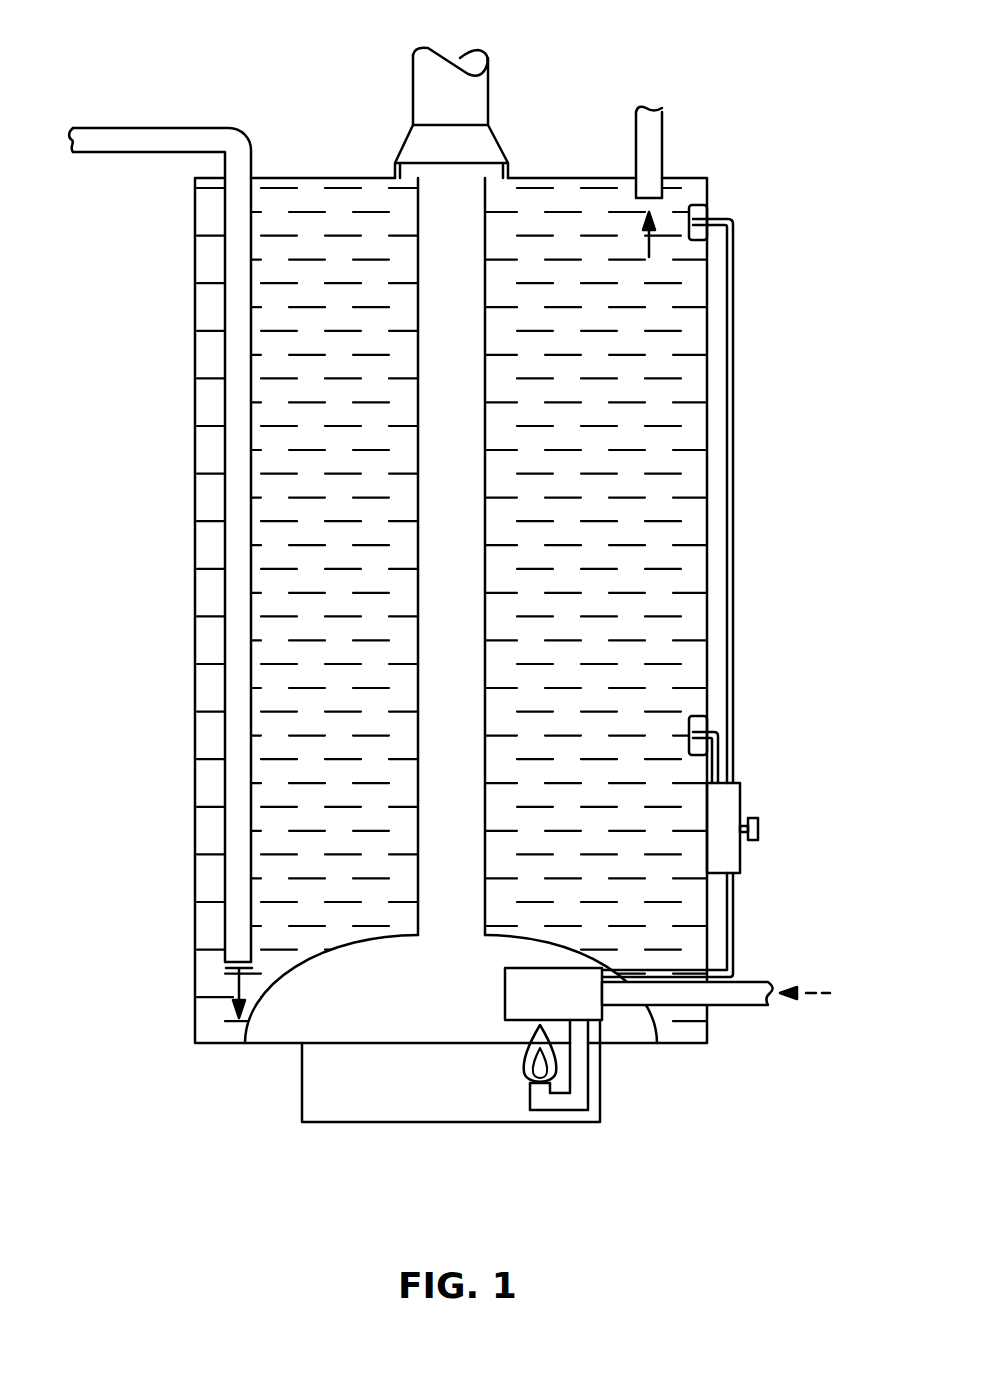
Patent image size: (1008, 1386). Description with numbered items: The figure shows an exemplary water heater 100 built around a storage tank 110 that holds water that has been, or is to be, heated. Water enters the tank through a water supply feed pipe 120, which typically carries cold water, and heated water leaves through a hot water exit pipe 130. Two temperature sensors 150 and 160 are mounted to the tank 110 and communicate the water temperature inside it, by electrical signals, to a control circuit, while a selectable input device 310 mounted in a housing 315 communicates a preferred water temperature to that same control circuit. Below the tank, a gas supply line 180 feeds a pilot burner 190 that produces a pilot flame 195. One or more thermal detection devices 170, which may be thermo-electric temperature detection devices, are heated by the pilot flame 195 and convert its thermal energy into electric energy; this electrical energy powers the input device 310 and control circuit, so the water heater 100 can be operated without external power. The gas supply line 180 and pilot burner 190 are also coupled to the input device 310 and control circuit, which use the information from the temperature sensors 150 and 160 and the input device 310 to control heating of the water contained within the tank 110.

The water heater 100 is at (191, 42).
The storage tank 110 is at (193, 560).
The water supply feed pipe 120 is at (140, 152).
The hot water exit pipe 130 is at (662, 143).
The temperature sensor 150 is at (698, 716).
The temperature sensor 160 is at (698, 240).
The thermal detection device 170 is at (505, 990).
The gas supply line 180 is at (735, 1005).
The pilot burner 190 is at (559, 1110).
The pilot flame 195 is at (522, 1068).
The selectable input device 310 is at (760, 829).
The housing 315 is at (733, 783).